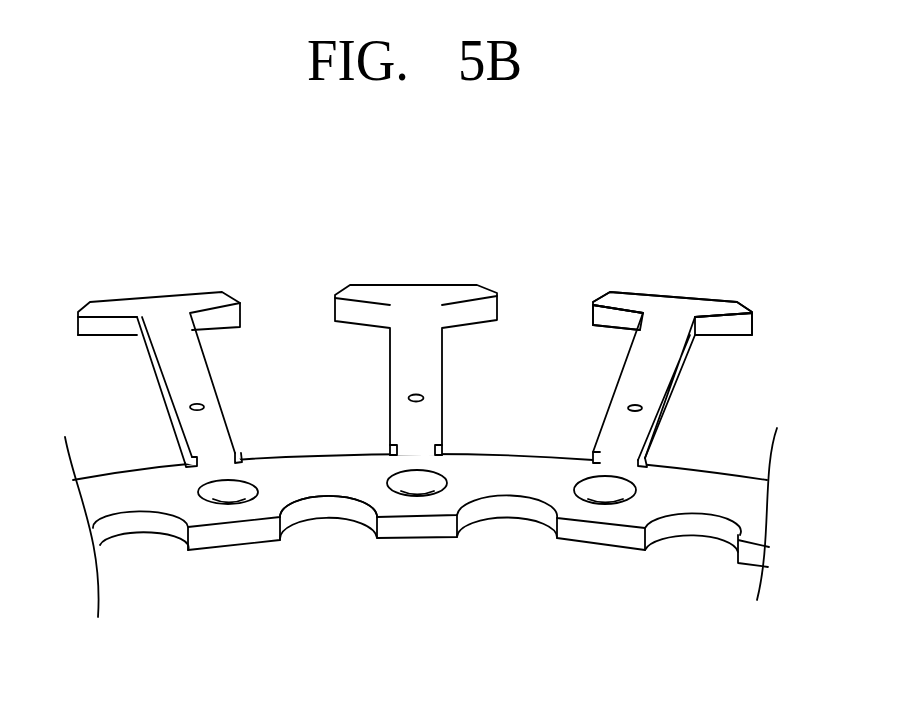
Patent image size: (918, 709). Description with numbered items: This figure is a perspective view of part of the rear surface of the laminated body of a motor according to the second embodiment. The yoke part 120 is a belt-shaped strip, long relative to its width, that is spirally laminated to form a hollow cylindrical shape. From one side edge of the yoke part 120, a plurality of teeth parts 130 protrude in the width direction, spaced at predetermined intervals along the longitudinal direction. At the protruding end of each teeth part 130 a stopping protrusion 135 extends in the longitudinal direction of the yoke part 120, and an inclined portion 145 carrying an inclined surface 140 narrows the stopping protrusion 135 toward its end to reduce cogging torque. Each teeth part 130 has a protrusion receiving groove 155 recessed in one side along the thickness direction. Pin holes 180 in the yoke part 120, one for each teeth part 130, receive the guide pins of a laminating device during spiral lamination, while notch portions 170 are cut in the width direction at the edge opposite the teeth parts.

The yoke part 120 is at (417, 528).
The teeth part 130 is at (172, 340).
The stopping protrusion 135 is at (739, 310).
The inclined surface 140 is at (611, 299).
The inclined portion 145 is at (603, 294).
The protrusion receiving groove 155 is at (412, 395).
The notch portion 170 is at (340, 507).
The pin hole 180 is at (237, 490).